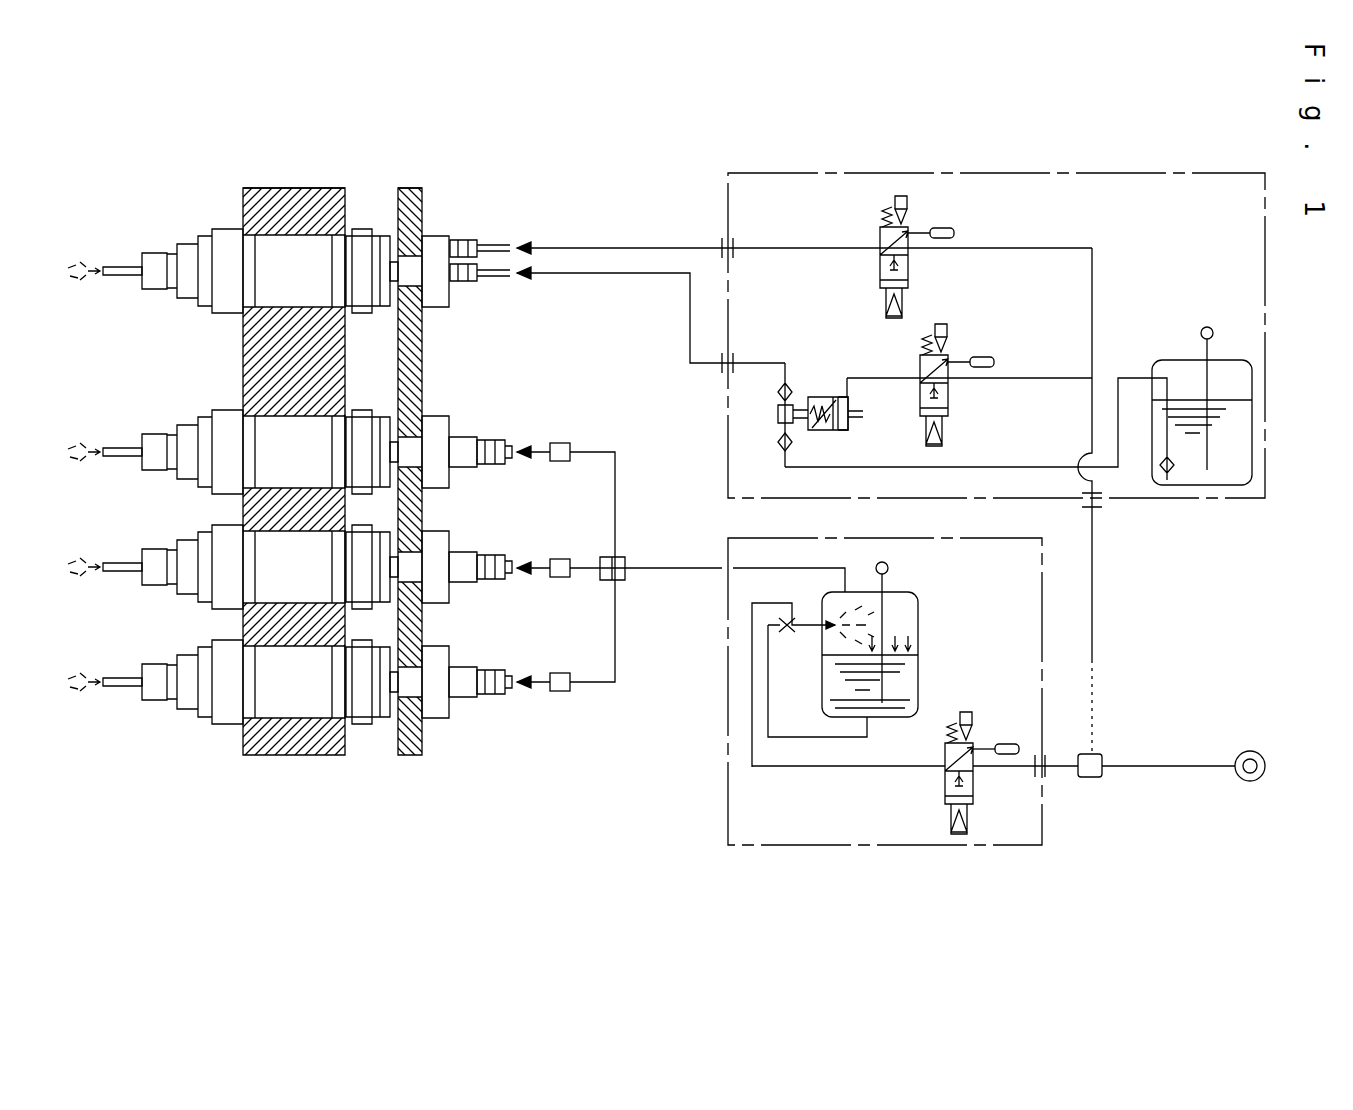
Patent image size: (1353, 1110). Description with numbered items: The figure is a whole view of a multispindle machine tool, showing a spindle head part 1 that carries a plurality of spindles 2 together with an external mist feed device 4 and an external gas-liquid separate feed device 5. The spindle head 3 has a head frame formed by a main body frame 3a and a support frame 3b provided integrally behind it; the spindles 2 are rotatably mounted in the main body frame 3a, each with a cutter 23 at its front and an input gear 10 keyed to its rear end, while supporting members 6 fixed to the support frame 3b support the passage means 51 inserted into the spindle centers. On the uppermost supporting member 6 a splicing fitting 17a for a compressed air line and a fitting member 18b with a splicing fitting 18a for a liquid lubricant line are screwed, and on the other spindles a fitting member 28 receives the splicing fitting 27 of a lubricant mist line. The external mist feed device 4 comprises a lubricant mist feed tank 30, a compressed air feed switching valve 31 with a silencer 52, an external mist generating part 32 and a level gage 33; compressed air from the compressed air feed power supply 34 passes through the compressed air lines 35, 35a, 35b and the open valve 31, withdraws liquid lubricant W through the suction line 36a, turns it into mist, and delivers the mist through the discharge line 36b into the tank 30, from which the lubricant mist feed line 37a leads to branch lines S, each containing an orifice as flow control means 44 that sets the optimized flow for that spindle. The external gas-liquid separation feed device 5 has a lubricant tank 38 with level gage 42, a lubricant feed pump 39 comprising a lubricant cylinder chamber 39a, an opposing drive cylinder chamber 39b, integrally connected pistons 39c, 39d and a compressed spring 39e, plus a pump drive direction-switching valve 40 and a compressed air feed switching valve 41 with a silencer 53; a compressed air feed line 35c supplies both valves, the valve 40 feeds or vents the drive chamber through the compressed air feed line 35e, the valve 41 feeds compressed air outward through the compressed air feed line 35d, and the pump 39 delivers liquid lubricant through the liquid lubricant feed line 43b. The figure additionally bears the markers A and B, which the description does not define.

The spindle head part 1 is at (332, 789).
The spindle 2 is at (190, 244).
The spindle head 3 is at (373, 140).
The main body frame 3a is at (300, 185).
The support frame 3b is at (410, 190).
The external mist feed device 4 is at (727, 826).
The external gas-liquid separate feed device 5 is at (1095, 172).
The supporting member 6 is at (437, 310).
The input gear 10 is at (364, 316).
The passage means 51 is at (393, 264).
The splicing fitting 17a is at (470, 242).
The splicing fitting 18a is at (470, 284).
The fitting member 18b is at (437, 268).
The cutter 23 is at (120, 276).
The splicing fitting 27 is at (493, 438).
The fitting member 28 is at (463, 468).
The flow control means 44 is at (560, 441).
The branch line S is at (597, 458).
The air passage side A is at (577, 200).
The mist passage side B is at (550, 720).
The compressed air feed line 35d is at (627, 246).
The liquid lubricant feed line 43b is at (648, 276).
The compressed air feed switching valve 41 is at (878, 237).
The silencer 53 is at (952, 233).
The lubricant feed pump 39 is at (830, 395).
The lubricant cylinder chamber 39a is at (780, 424).
The drive cylinder chamber 39b is at (850, 405).
The piston 39c is at (790, 400).
The piston 39d is at (838, 432).
The compressed spring 39e is at (812, 440).
The compressed air feed line 35e is at (893, 377).
The pump drive direction-switching valve 40 is at (955, 410).
The compressed air feed line 35c is at (1094, 318).
The level gage 42 is at (1205, 327).
The lubricant tank 38 is at (1235, 358).
The lubricant mist feed line 37a is at (770, 568).
The level gage 33 is at (890, 568).
The discharge line 36b is at (812, 623).
The lubricant mist feed tank 30 is at (920, 620).
The external mist generating part 32 is at (787, 633).
The liquid lubricant W is at (832, 695).
The suction line 36a is at (855, 738).
The compressed air line 35b is at (845, 768).
The compressed air feed switching valve 31 is at (943, 795).
The silencer 52 is at (1008, 745).
The compressed air line 35a is at (1020, 768).
The compressed air line 35 is at (1168, 762).
The compressed air feed power supply 34 is at (1248, 750).